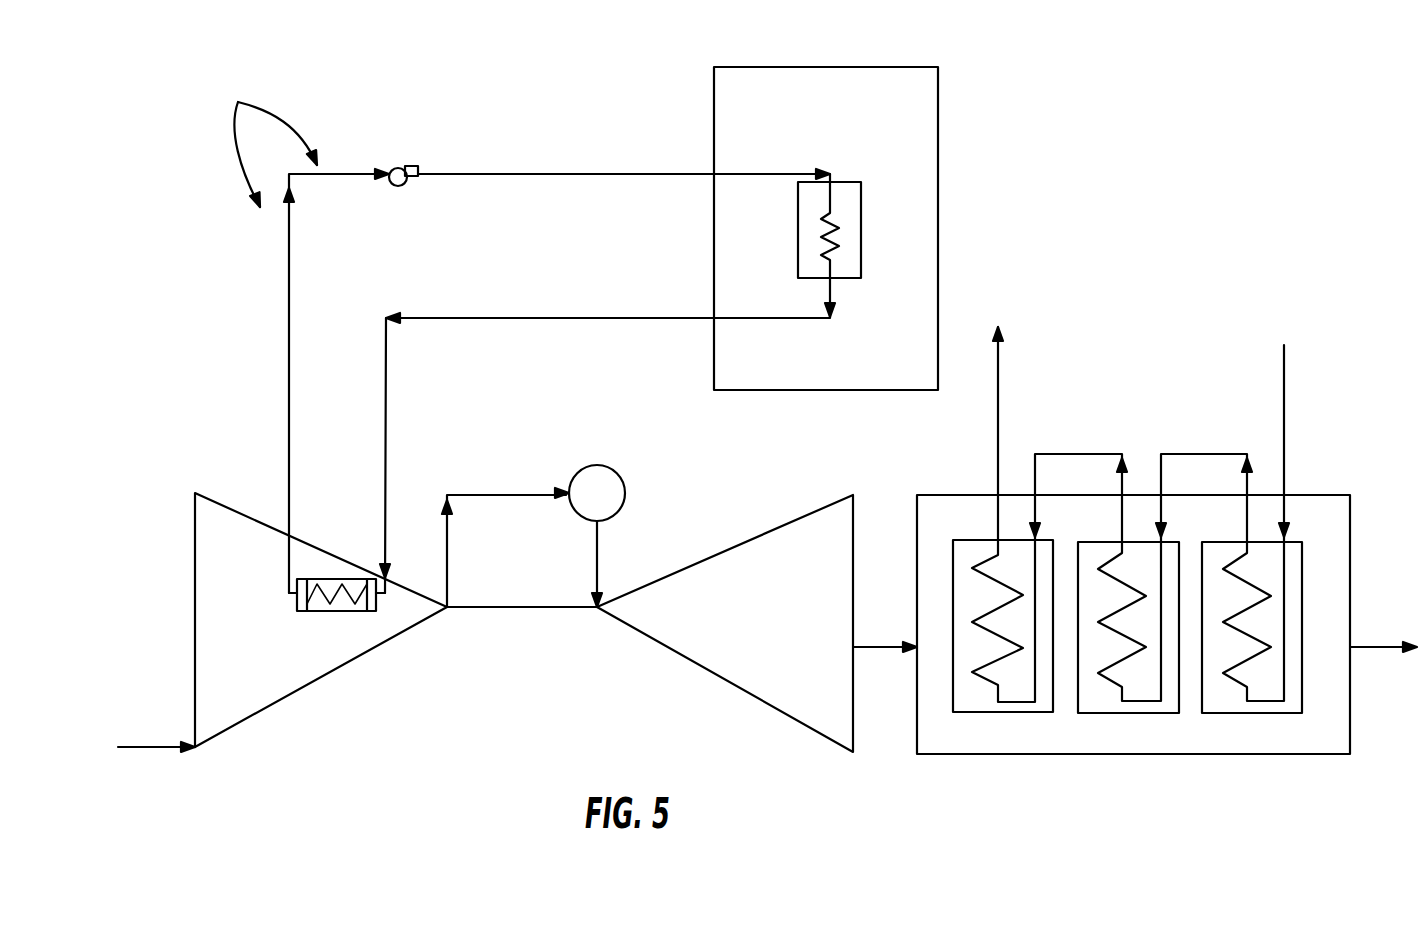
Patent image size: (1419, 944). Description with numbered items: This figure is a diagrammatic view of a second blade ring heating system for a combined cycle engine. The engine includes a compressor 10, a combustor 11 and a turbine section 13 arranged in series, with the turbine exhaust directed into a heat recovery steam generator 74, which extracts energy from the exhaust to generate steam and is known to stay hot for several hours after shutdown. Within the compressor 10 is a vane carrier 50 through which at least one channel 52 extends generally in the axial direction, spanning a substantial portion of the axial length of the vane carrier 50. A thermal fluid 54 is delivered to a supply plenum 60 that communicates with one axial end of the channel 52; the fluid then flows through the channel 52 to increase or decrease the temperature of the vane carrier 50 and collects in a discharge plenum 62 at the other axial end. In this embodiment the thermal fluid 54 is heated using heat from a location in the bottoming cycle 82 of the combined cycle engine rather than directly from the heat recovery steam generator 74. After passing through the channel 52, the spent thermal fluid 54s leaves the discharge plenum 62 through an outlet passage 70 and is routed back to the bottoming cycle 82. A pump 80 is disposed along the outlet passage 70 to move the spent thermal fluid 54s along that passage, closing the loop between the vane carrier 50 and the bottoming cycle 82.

The compressor 10 is at (200, 527).
The combustor 11 is at (612, 487).
The turbine section 13 is at (845, 722).
The vane carrier 50 is at (318, 612).
The channel 52 is at (348, 610).
The thermal fluid 54 is at (385, 395).
The spent thermal fluid 54s is at (288, 340).
The supply plenum 60 is at (375, 600).
The discharge plenum 62 is at (295, 605).
The outlet passage 70 is at (270, 134).
The heat recovery steam generator 74 is at (1350, 756).
The pump 80 is at (400, 165).
The bottoming cycle 82 is at (940, 135).